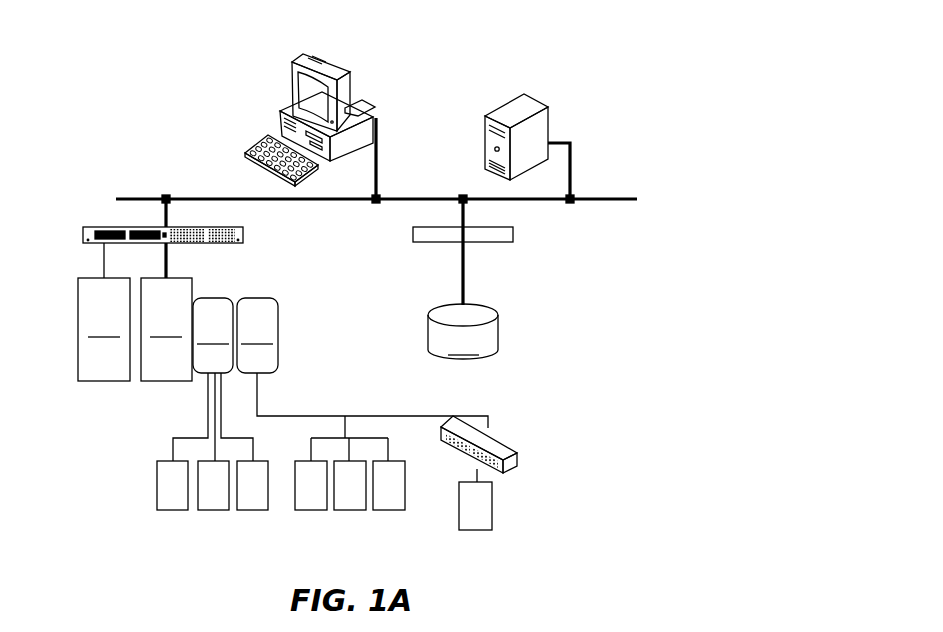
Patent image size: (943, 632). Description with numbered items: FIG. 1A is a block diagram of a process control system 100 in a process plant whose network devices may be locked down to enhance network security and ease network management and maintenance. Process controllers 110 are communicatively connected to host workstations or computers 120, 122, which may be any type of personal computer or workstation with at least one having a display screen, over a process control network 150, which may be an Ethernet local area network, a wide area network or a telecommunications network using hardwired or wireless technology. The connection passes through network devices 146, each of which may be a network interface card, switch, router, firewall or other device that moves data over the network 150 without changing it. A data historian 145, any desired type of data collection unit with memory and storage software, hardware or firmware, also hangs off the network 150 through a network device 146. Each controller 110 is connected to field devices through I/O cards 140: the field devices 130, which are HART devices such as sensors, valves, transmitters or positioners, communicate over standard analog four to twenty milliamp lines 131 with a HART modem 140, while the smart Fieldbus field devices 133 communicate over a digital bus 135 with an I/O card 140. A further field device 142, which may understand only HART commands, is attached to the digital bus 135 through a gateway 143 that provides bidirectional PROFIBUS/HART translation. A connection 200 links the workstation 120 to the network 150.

The process control system 100 is at (470, 48).
The process controller 110 is at (135, 312).
The host workstation 120 is at (362, 87).
The host computer 122 is at (550, 118).
The field devices 130 is at (189, 522).
The analog 4-20 mA lines 131 is at (207, 405).
The smart field devices 133 is at (327, 522).
The digital bus 135 is at (305, 414).
The I/O card 140 is at (235, 335).
The field device 142 is at (492, 502).
The gateway 143 is at (503, 441).
The data historian 145 is at (463, 331).
The network device 146 is at (97, 226).
The process control network 150 is at (193, 197).
The network connection 200 is at (375, 112).